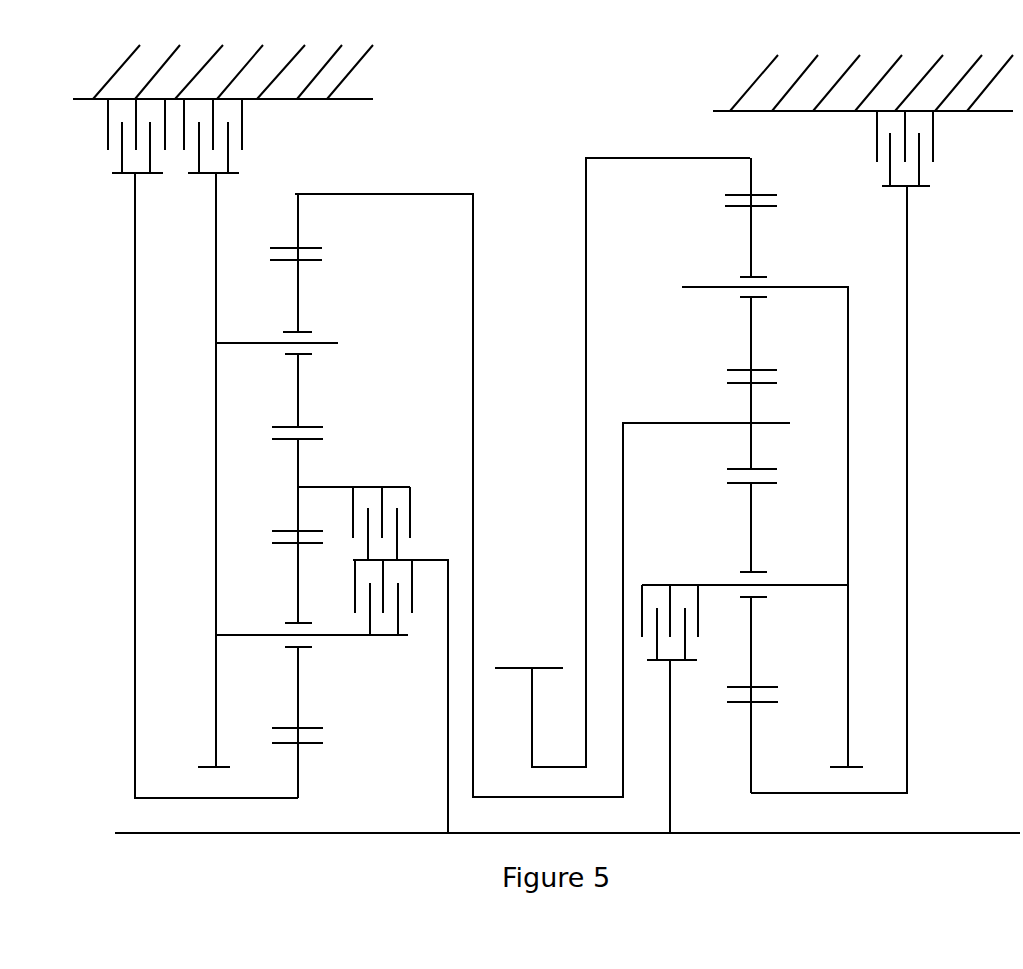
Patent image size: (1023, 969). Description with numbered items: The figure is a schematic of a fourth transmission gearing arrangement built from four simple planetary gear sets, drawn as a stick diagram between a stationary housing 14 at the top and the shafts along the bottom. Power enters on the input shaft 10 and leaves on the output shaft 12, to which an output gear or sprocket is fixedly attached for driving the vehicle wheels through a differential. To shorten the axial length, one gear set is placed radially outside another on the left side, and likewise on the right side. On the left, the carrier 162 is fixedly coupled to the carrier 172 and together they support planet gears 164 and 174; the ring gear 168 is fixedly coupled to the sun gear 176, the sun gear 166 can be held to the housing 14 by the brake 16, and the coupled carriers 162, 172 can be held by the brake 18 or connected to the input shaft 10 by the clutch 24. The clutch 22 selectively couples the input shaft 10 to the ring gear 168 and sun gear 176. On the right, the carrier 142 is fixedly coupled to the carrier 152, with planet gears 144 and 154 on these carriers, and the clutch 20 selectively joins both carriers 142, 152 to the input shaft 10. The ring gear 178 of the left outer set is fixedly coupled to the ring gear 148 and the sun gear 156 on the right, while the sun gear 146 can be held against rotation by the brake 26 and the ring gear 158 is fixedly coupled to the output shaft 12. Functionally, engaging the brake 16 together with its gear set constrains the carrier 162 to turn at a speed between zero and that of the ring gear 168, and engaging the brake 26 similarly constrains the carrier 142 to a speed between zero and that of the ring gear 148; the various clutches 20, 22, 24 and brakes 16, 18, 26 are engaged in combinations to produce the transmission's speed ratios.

The input shaft 10 is at (992, 830).
The output shaft 12 is at (527, 667).
The housing 14 is at (353, 63).
The brake 16 is at (108, 122).
The brake 18 is at (242, 123).
The clutch 20 is at (658, 580).
The clutch 22 is at (388, 485).
The clutch 24 is at (387, 638).
The brake 26 is at (933, 140).
The carrier 142 is at (848, 422).
The shaft 144 is at (752, 535).
The sun gear 146 is at (753, 753).
The ring gear 148 is at (752, 442).
The carrier 152 is at (874, 527).
The shaft 154 is at (748, 252).
The sun gear 156 is at (752, 408).
The ring gear 158 is at (748, 172).
The carrier 162 is at (215, 548).
The shaft 164 is at (300, 597).
The sun gear 166 is at (300, 793).
The ring gear 168 is at (295, 497).
The carrier 172 is at (190, 470).
The shaft 174 is at (298, 315).
The sun gear 176 is at (300, 473).
The ring gear 178 is at (296, 228).